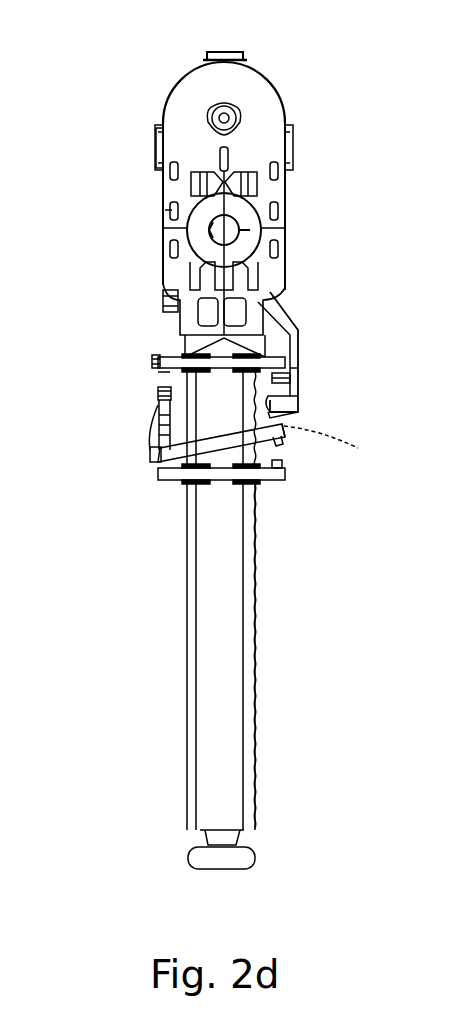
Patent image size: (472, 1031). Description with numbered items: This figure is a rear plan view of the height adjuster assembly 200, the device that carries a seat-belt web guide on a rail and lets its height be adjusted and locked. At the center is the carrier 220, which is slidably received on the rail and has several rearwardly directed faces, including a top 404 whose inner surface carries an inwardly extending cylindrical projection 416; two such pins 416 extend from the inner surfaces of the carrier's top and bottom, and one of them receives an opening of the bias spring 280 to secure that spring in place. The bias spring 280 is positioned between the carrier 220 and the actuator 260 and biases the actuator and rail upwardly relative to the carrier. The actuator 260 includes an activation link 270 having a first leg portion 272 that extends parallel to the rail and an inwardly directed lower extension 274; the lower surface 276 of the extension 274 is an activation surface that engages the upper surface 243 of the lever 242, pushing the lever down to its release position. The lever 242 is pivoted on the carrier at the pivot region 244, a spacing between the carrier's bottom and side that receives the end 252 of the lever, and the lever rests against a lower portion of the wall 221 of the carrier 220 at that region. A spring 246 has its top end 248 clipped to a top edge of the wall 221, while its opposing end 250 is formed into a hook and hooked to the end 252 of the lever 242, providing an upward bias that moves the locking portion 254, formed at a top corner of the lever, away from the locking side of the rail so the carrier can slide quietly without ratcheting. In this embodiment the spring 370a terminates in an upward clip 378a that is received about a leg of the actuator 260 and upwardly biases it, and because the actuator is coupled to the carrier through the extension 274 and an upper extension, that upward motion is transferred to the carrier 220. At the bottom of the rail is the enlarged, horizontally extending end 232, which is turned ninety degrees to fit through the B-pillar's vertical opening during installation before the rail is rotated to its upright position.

The height adjuster assembly 200 is at (296, 116).
The spring 370a is at (164, 193).
The clip 378a is at (162, 345).
The bias spring 280 is at (163, 298).
The top 404 is at (160, 356).
The carrier 220 is at (150, 362).
The wall 221 is at (162, 372).
The top end 248 is at (158, 391).
The spring 246 is at (150, 437).
The opposing end 250 is at (150, 452).
The end 252 is at (158, 470).
The lever 242 is at (227, 445).
The pivot region 244 is at (162, 466).
The enlarged end 232 is at (255, 848).
The actuator 260 is at (290, 308).
The activation link 270 is at (300, 353).
The first leg portion 272 is at (300, 375).
The cylindrical projection 416 is at (292, 384).
The lower extension 274 is at (298, 403).
The lower surface 276 is at (290, 413).
The upper surface 243 is at (288, 430).
The locking portion 254 is at (333, 451).